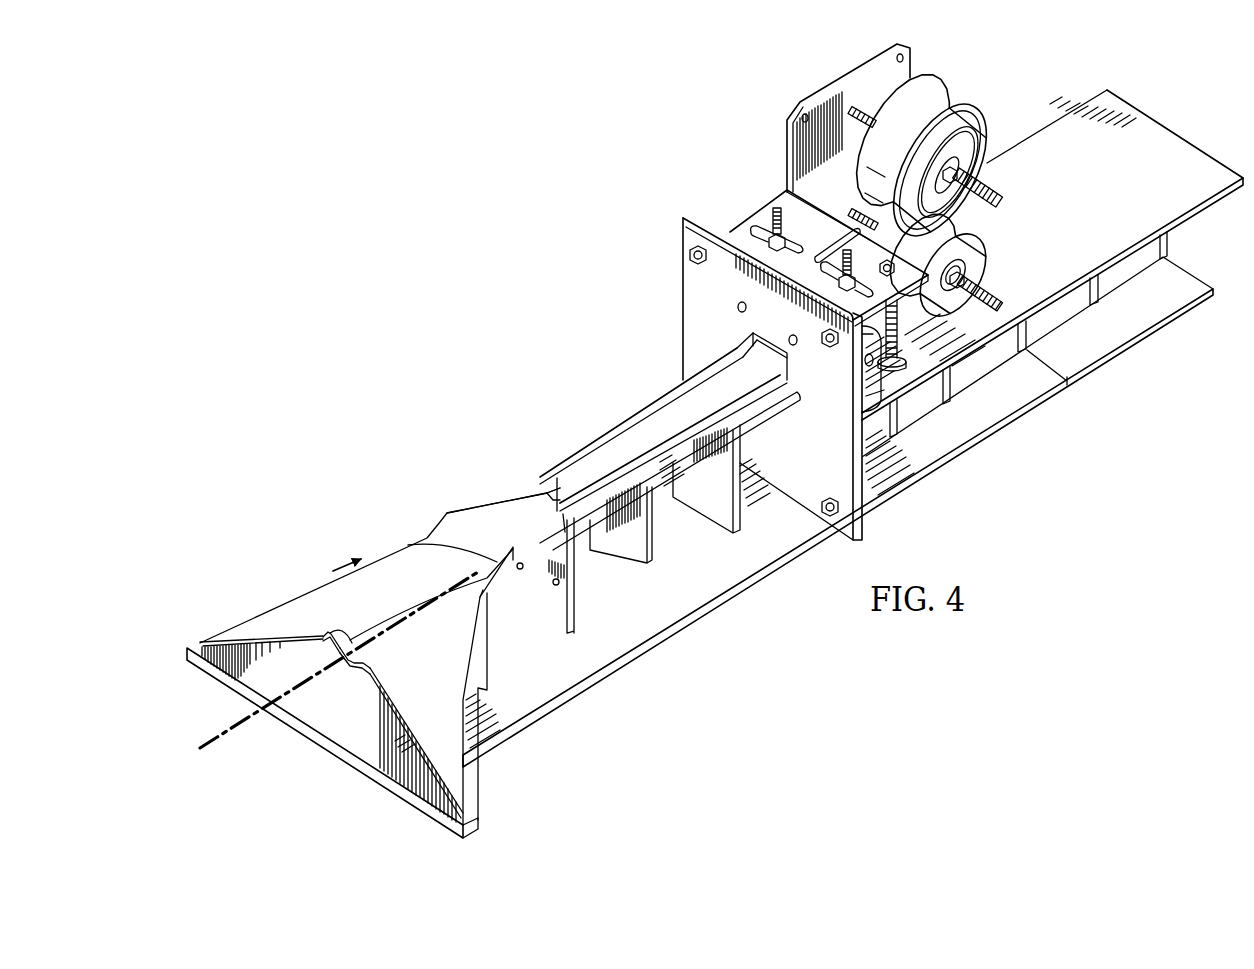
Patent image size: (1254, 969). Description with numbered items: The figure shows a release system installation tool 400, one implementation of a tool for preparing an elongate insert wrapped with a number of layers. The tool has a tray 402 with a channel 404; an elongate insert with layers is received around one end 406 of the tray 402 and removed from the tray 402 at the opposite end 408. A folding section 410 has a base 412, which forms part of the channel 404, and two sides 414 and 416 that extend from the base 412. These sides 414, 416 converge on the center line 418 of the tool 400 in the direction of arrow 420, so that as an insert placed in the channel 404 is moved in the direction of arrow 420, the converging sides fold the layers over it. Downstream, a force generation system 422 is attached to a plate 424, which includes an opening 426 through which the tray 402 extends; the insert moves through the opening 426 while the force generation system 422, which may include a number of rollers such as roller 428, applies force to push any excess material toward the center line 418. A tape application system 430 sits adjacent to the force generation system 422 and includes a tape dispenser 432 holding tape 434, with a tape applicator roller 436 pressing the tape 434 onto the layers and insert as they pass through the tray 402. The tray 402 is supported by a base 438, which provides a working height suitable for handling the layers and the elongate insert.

The release system installation tool 400 is at (553, 243).
The tray 402 is at (313, 605).
The channel 404 is at (348, 670).
The end 406 is at (320, 645).
The end 408 is at (822, 90).
The folding section 410 is at (454, 442).
The base 412 is at (432, 533).
The side 414 is at (467, 506).
The side 416 is at (498, 583).
The center line 418 is at (213, 738).
The arrow 420 is at (343, 562).
The force generation system 422 is at (763, 215).
The plate 424 is at (690, 283).
The opening 426 is at (757, 350).
The roller 428 is at (850, 403).
The tape application system 430 is at (1012, 83).
The tape dispenser 432 is at (967, 148).
The tape 434 is at (953, 95).
The tape applicator roller 436 is at (972, 253).
The base 438 is at (565, 684).